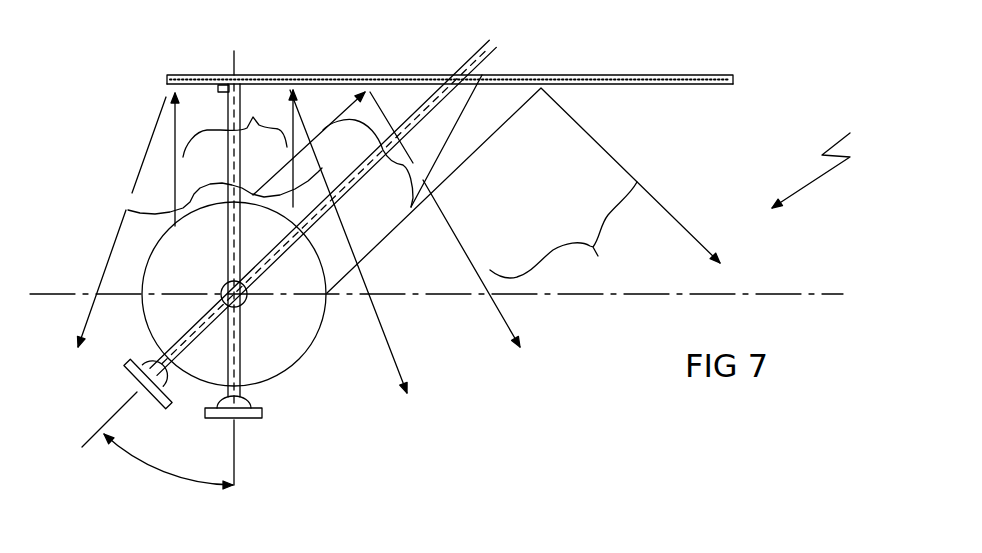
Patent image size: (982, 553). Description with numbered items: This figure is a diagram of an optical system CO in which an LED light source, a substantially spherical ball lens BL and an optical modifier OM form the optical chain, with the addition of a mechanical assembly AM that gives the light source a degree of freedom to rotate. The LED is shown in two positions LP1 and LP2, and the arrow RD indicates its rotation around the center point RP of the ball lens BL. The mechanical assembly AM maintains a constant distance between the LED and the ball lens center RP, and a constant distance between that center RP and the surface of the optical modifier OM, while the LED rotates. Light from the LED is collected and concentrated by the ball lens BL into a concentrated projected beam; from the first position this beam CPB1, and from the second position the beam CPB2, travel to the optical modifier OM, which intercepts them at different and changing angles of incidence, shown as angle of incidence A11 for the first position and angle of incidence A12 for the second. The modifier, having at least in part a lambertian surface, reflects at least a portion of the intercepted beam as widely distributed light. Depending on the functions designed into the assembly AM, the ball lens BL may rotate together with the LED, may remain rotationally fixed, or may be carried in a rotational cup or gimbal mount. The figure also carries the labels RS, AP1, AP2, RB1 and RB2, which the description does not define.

The optical modifier OM is at (693, 67).
The reflecting surface RS is at (688, 85).
The mechanical assembly AM is at (242, 350).
The angle of incidence A11 is at (217, 100).
The angle of incidence A12 is at (424, 101).
The first LED position LP1 is at (247, 418).
The second LED position LP2 is at (133, 383).
The first angular position AP1 is at (234, 462).
The second angular position AP2 is at (105, 441).
The ball lens center point RP is at (247, 298).
The ball lens BL is at (302, 355).
The rotation arrow RD is at (165, 473).
The concentrated projected beam CPB1 is at (253, 117).
The concentrated projected beam CPB2 is at (482, 75).
The first reflected beam RB1 is at (128, 210).
The second reflected beam RB2 is at (523, 217).
The optical system CO is at (829, 165).